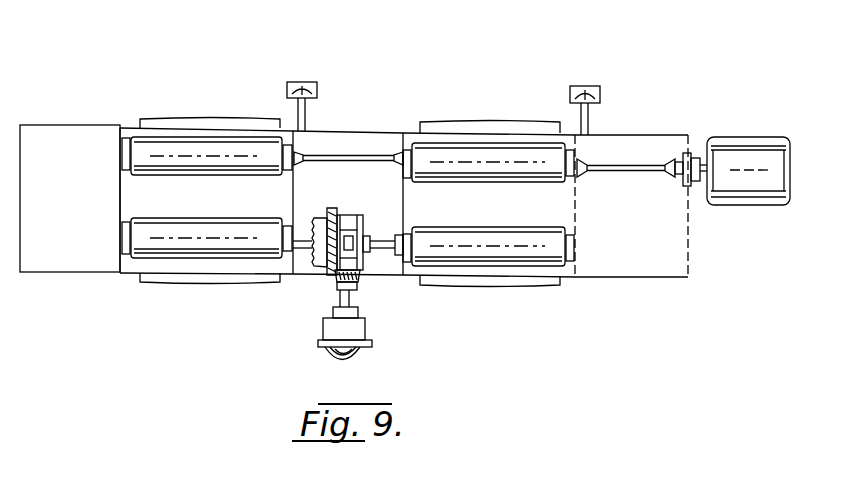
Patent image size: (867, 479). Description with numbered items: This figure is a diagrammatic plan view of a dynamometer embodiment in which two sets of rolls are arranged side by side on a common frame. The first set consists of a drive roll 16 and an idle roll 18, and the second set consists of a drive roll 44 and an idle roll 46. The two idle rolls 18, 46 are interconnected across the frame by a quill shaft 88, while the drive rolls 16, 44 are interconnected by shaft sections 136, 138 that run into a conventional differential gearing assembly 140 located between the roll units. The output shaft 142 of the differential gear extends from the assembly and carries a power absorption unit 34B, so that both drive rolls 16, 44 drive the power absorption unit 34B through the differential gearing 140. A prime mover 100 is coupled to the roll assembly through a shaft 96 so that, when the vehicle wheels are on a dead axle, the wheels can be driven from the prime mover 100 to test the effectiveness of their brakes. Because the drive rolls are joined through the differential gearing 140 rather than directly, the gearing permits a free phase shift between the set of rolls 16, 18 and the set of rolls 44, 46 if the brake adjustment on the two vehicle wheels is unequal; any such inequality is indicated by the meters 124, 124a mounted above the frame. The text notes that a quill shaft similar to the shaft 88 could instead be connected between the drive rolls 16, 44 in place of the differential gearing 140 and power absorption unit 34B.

The drive roll 16 is at (208, 224).
The idle roll 18 is at (168, 171).
The power absorption unit 34B is at (356, 332).
The drive roll 44 is at (512, 240).
The idle roll 46 is at (451, 180).
The quill shaft 88 is at (349, 160).
The shaft 96 is at (605, 171).
The prime mover 100 is at (748, 150).
The meter 124 is at (301, 82).
The meter 124a is at (590, 86).
The shaft section 136 is at (308, 238).
The shaft section 138 is at (383, 242).
The differential gearing assembly 140 is at (351, 217).
The output shaft 142 is at (338, 293).